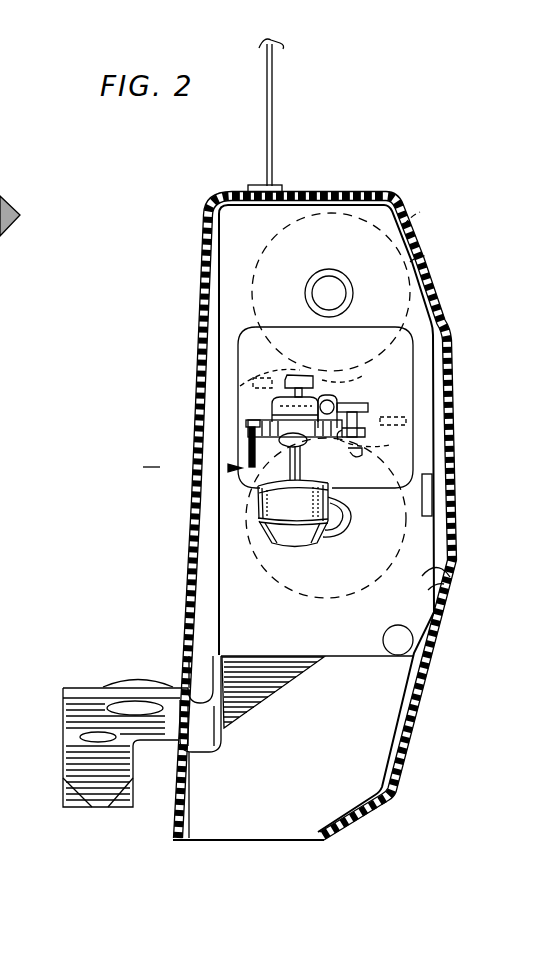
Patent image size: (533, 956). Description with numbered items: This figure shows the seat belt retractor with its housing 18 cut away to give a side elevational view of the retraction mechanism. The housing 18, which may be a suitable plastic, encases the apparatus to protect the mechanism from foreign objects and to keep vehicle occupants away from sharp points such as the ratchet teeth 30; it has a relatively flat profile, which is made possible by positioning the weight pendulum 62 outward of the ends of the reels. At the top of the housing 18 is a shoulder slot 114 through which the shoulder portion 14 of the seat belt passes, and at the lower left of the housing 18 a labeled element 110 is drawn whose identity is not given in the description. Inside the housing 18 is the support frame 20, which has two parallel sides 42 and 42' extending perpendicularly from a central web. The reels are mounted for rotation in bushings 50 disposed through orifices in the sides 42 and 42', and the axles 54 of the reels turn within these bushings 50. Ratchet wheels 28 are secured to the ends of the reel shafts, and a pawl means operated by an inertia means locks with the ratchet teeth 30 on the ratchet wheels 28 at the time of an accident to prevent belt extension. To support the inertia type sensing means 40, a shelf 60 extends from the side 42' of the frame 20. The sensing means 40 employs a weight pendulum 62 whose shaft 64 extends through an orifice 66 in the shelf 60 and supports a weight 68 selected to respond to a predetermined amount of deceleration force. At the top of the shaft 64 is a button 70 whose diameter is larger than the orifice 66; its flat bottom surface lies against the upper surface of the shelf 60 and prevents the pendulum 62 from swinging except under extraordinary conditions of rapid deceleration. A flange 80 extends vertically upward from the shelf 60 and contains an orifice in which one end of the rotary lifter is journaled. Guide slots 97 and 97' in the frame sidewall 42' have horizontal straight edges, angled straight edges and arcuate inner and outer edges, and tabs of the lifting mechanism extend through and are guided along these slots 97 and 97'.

The shoulder portion 14 is at (276, 110).
The shoulder slot 114 is at (257, 186).
The support frame 20 is at (298, 208).
The housing 18 is at (404, 204).
The ratchet teeth 30 is at (418, 232).
The ratchet wheels 28 is at (428, 258).
The axles 54 is at (330, 290).
The bushings 50 is at (343, 283).
The guide slot 97 is at (301, 348).
The flange 80 is at (338, 398).
The button 70 is at (285, 418).
The orifice 66 is at (272, 420).
The shelf 60 is at (248, 424).
The sensing means 40 is at (240, 468).
The shaft 64 is at (288, 462).
The weight pendulum 62 is at (312, 470).
The guide slot 97' is at (407, 444).
The weight 68 is at (297, 546).
The frame side 42' is at (464, 572).
The frame side 42 is at (252, 704).
The nozzle block 110 is at (80, 688).